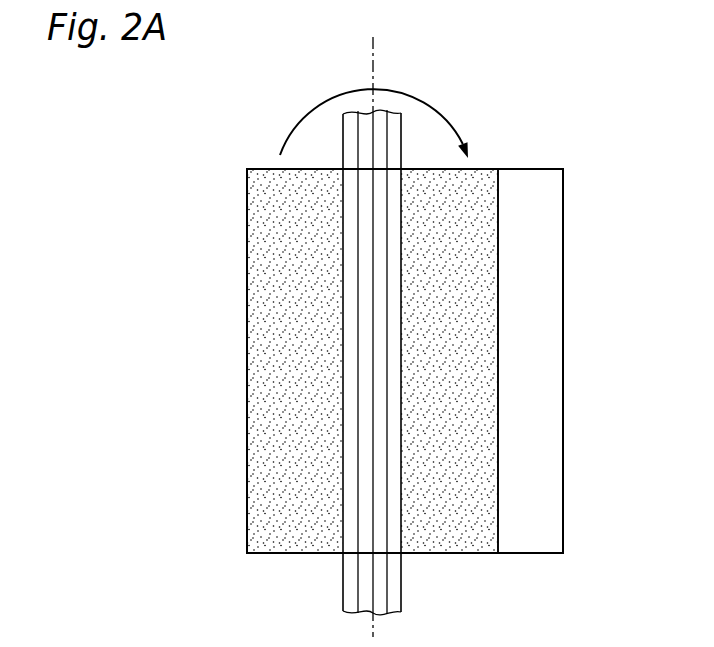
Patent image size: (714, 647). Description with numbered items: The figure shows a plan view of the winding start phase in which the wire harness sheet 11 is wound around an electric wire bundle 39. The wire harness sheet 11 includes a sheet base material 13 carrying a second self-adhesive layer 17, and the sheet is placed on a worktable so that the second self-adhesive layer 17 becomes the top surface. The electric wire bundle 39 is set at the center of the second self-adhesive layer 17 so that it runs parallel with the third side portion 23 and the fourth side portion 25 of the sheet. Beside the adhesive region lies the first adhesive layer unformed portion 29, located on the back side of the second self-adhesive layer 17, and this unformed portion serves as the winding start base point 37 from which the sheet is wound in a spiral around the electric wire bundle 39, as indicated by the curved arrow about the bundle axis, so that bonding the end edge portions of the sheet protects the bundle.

The wire harness sheet 11 is at (206, 170).
The sheet base material 13 is at (545, 169).
The second self-adhesive layer 17 is at (268, 458).
The third side portion 23 is at (247, 237).
The fourth side portion 25 is at (563, 240).
The first adhesive layer unformed portion 29 is at (538, 390).
The winding start base point 37 is at (373, 58).
The electric wire bundle 39 is at (343, 587).